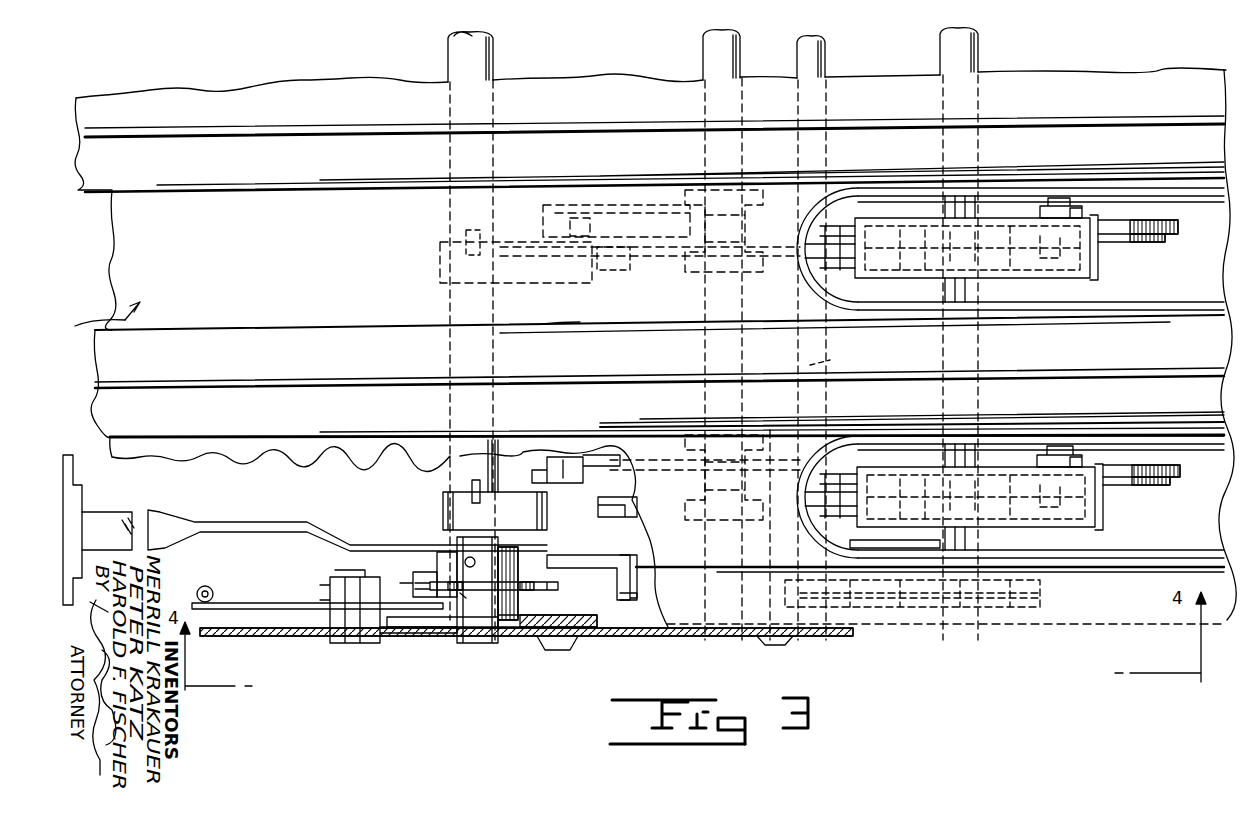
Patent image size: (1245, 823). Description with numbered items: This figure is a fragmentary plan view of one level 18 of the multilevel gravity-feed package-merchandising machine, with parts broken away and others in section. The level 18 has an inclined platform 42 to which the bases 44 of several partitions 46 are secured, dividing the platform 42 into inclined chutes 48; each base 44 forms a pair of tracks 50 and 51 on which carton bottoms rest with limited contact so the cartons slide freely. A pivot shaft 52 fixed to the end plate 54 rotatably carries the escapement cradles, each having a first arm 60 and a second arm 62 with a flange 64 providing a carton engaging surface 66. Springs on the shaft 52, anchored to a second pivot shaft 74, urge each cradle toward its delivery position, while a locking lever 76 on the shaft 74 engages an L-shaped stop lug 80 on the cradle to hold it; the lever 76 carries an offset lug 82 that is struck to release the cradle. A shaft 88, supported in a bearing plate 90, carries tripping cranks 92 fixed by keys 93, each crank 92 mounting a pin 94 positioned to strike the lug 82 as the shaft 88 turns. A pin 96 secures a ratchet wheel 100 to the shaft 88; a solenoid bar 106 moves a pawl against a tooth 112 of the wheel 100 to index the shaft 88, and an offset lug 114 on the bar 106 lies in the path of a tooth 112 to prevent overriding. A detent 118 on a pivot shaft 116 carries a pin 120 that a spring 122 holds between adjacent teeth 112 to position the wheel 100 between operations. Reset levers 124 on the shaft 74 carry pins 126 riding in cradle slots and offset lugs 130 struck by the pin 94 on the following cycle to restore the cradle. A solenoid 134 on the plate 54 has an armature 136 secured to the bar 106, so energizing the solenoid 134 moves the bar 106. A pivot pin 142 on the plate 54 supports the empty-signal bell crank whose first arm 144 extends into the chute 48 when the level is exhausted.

The level 18 is at (1050, 58).
The platform 42 is at (110, 270).
The base 44 is at (104, 186).
The partition 46 is at (172, 128).
The chute 48 is at (96, 318).
The track 50 is at (512, 186).
The track 51 is at (552, 328).
The pivot shaft 52 is at (985, 546).
The end plate 54 is at (282, 640).
The first arm 60 is at (1170, 216).
The second arm 62 is at (875, 218).
The flange 64 is at (1098, 278).
The carton engaging surface 66 is at (1032, 271).
The pivot shaft 74 is at (700, 298).
The locking lever 76 is at (600, 462).
The L-shaped stop lug 80 is at (918, 218).
The offset lug 82 is at (578, 468).
The shaft 88 is at (476, 648).
The bearing plate 90 is at (436, 645).
The tripping crank 92 is at (440, 268).
The key 93 is at (468, 230).
The pin 94 is at (592, 234).
The pin 96 is at (466, 558).
The ratchet wheel 100 is at (554, 596).
The solenoid bar 106 is at (380, 545).
The tooth 112 is at (478, 604).
The offset lug 114 is at (660, 585).
The pivot shaft 116 is at (352, 650).
The detent 118 is at (306, 603).
The pin 120 is at (418, 576).
The spring 122 is at (214, 590).
The reset lever 124 is at (658, 520).
The pin 126 is at (1075, 206).
The offset lug 130 is at (608, 275).
The solenoid 134 is at (82, 488).
The armature 136 is at (120, 516).
The pivot pin 142 is at (832, 360).
The first arm 144 is at (955, 548).